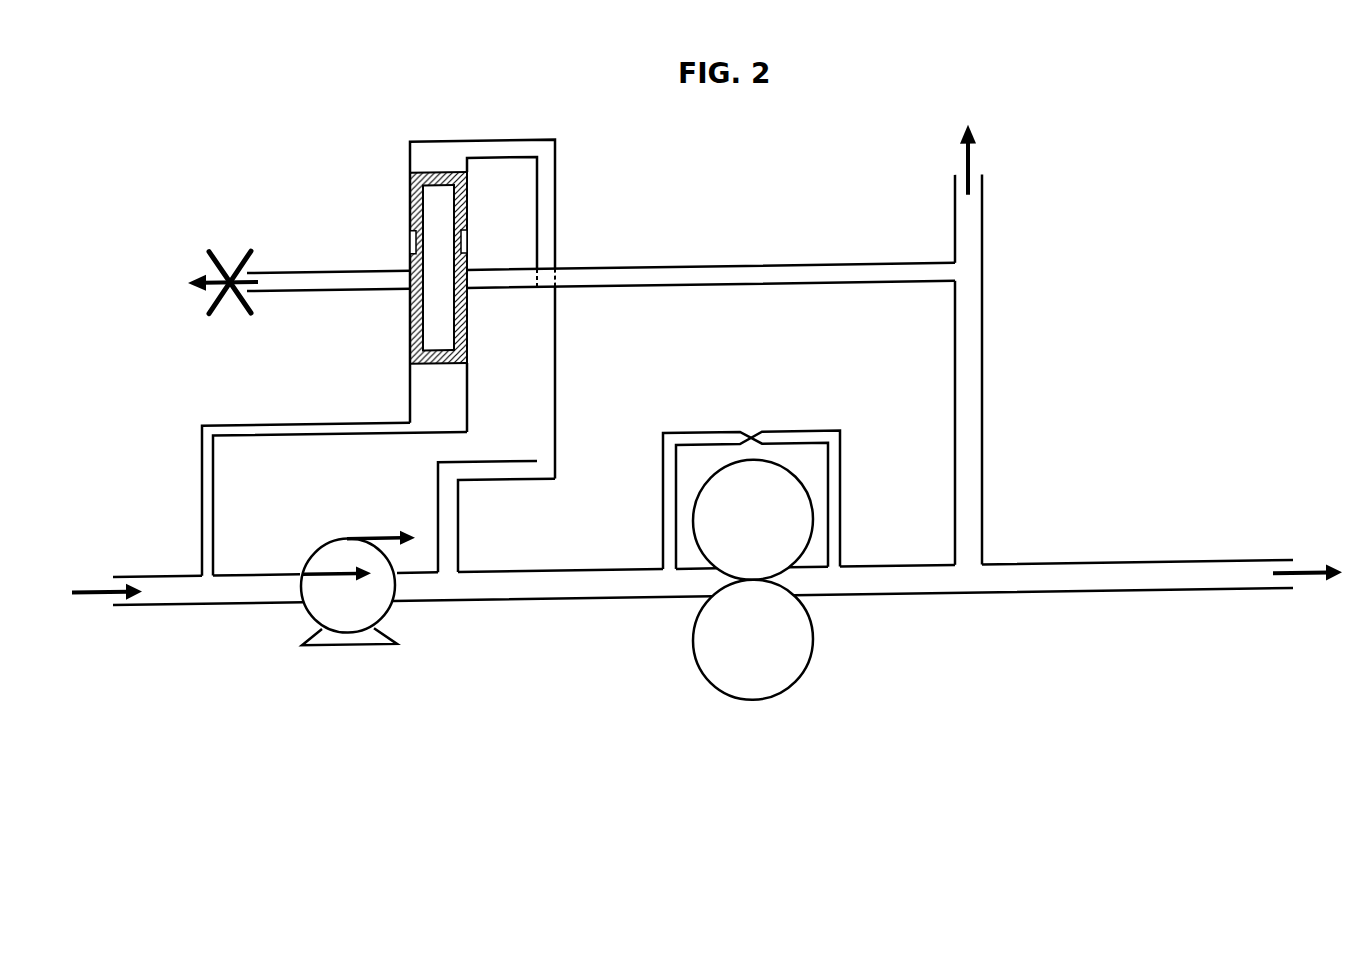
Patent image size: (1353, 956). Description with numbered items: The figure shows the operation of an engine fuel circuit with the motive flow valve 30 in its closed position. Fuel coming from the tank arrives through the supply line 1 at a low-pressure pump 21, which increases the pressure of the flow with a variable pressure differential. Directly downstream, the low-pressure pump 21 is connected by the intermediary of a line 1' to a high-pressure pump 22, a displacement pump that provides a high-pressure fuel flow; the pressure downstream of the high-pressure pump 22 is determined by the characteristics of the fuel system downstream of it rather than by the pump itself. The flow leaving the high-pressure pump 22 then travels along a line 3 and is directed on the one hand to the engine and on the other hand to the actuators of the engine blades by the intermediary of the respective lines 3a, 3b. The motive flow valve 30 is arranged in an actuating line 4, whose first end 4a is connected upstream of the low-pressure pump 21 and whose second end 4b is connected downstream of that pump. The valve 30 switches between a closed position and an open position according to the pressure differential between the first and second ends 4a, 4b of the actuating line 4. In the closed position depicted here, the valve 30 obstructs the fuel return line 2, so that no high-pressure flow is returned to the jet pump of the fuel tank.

The supply line 1 is at (187, 624).
The line 1' is at (555, 620).
The fuel return line 2 is at (784, 262).
The discharge line 3 is at (895, 565).
The line 3a is at (1141, 560).
The line 3b is at (985, 393).
The actuating line 4 is at (558, 212).
The first end of the actuating line 4a is at (200, 574).
The second end of the actuating line 4b is at (460, 571).
The low-pressure pump 21 is at (393, 614).
The high-pressure pump 22 is at (815, 636).
The motive flow valve 30 is at (411, 195).